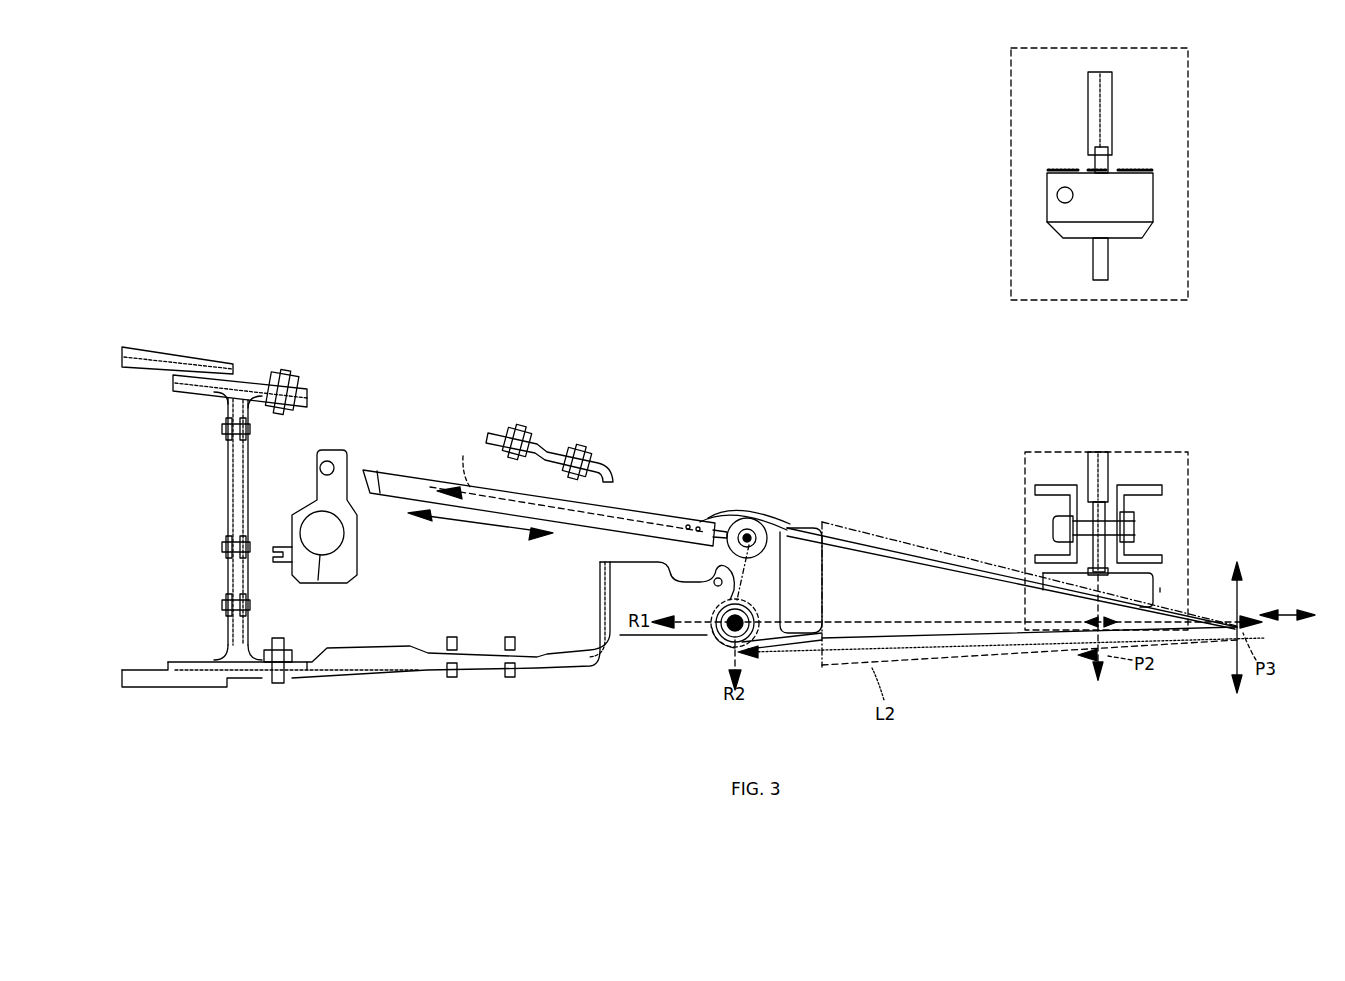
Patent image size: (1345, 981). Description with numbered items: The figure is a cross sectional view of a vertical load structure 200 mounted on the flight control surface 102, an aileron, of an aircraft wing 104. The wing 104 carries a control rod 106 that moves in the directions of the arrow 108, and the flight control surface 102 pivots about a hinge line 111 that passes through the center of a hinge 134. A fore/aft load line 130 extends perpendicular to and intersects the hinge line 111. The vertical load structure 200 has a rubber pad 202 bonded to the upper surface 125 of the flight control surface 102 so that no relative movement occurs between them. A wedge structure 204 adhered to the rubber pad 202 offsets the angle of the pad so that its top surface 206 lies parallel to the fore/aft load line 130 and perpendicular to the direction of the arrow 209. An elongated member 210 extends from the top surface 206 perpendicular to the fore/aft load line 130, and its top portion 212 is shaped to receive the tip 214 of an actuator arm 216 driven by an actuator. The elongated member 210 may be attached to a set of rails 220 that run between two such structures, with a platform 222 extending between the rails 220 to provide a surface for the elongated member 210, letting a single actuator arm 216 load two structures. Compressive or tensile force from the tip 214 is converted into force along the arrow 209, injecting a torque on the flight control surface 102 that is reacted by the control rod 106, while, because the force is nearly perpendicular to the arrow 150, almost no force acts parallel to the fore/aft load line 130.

The flight control surface 102 is at (836, 520).
The wing 104 is at (308, 340).
The control rod 106 is at (640, 512).
The arrow 108 is at (478, 527).
The hinge line 111 is at (728, 632).
The upper surface 125 is at (905, 545).
The fore/aft load line 130 is at (780, 645).
The hinge 134 is at (745, 605).
The arrow 150 is at (1290, 617).
The vertical load structure 200 is at (1025, 470).
The rubber pad 202 is at (1043, 577).
The wedge structure 204 is at (1160, 592).
The top surface 206 is at (1117, 575).
The arrow 209 is at (1240, 585).
The elongated member 210 is at (1140, 488).
The top portion 212 is at (1098, 452).
The tip 214 is at (1093, 258).
The actuator arm 216 is at (1011, 80).
The set of rails 220 is at (1045, 485).
The platform 222 is at (1053, 523).